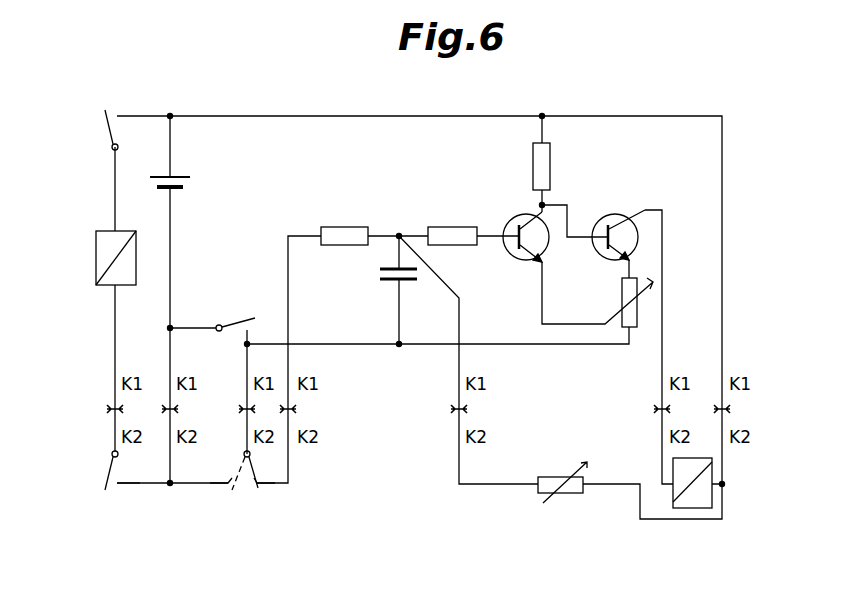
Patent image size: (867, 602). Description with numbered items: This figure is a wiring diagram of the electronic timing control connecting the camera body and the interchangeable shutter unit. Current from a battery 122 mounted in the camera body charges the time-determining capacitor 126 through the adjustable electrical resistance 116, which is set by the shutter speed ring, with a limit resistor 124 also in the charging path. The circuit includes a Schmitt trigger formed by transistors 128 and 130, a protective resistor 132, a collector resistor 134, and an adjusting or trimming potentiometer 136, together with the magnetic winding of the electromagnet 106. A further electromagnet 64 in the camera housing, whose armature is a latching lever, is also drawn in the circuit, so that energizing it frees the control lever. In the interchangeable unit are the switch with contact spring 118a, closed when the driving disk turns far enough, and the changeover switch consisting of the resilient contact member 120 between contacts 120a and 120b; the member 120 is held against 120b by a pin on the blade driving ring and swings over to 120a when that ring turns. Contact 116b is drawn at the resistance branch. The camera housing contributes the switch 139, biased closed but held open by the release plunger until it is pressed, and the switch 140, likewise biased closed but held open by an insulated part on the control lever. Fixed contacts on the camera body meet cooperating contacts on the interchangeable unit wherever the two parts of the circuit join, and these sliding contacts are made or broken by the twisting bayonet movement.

The switch 140 is at (108, 125).
The electromagnet 64 is at (96, 250).
The battery 122 is at (178, 176).
The switch 139 is at (233, 316).
The limit resistor 124 is at (337, 226).
The protective resistor 132 is at (448, 226).
The time-determining capacitor 126 is at (385, 283).
The collector resistor 134 is at (546, 168).
The transistor 128 is at (511, 259).
The transistor 130 is at (600, 253).
The adjusting or trimming potentiometer 136 is at (620, 293).
The switch contact 116b is at (108, 475).
The contact spring 118a is at (125, 487).
The resilient contact member 120a is at (225, 487).
The resilient contact member 120b is at (265, 487).
The resilient contact member 120 is at (250, 490).
The variable electrical resistance 116 is at (572, 491).
The electromagnet 106 is at (697, 504).